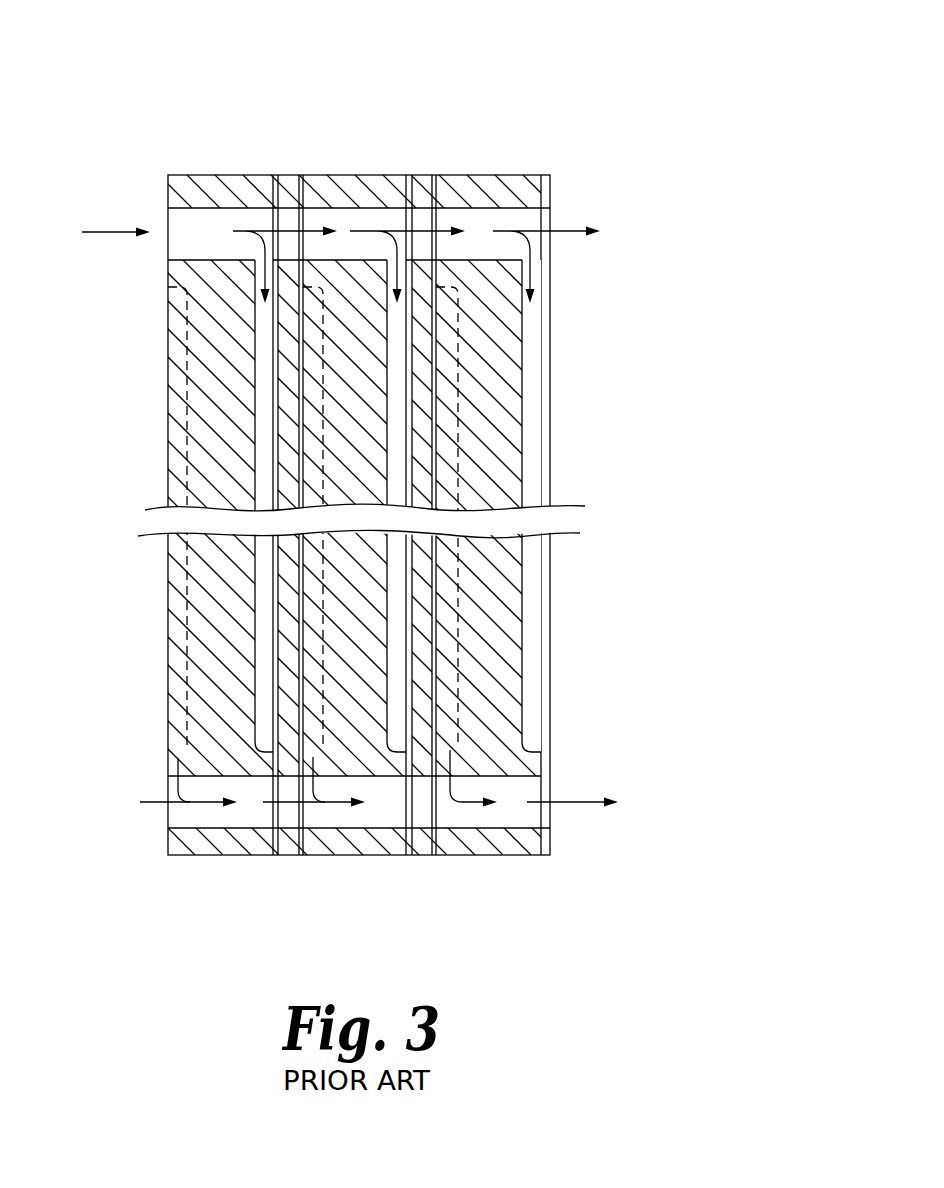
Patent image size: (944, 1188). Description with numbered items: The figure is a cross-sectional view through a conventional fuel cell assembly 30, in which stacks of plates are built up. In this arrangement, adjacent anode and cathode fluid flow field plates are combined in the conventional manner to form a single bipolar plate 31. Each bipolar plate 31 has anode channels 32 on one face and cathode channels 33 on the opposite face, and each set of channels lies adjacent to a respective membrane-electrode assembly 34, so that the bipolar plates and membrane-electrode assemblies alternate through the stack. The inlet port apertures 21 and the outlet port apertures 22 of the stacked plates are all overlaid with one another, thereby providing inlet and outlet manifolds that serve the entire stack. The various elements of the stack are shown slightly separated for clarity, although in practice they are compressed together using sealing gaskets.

The conventional fuel cell assembly 30 is at (152, 124).
The bipolar plate 31 is at (228, 185).
The anode channels 32 is at (395, 355).
The cathode channels 33 is at (450, 453).
The membrane-electrode assembly 34 is at (288, 185).
The inlet port apertures 21 is at (320, 249).
The outlet port apertures 22 is at (407, 798).